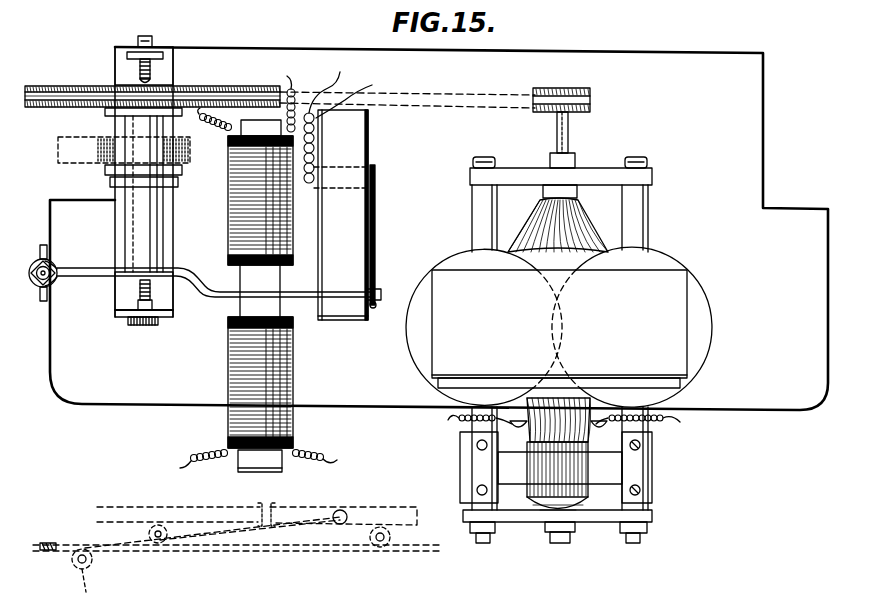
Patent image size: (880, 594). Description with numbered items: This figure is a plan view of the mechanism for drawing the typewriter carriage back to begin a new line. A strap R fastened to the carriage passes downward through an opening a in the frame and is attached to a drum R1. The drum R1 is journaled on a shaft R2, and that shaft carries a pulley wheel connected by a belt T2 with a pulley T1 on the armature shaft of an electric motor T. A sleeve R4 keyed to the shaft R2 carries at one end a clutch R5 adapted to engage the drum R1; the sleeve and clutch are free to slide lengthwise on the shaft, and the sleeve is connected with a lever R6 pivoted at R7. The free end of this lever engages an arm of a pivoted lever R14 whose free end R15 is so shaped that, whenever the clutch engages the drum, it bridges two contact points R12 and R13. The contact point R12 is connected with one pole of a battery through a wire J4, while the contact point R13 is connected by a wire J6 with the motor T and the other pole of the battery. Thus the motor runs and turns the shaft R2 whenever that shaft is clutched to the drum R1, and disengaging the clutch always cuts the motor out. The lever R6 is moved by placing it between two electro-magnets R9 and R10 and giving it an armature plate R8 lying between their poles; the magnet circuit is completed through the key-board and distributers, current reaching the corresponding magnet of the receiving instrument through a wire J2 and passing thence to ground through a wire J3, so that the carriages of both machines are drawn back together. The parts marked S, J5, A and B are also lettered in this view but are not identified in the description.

The frame or casing S is at (439, 228).
The strap R is at (53, 164).
The drum R1 is at (130, 123).
The shaft R2 is at (151, 84).
The sleeve R4 is at (158, 217).
The clutch R5 is at (180, 184).
The lever R6 is at (183, 270).
The pivot R7 is at (57, 281).
The armature plate R8 is at (297, 272).
The electro-magnet R9 is at (271, 192).
The electro-magnet R10 is at (275, 394).
The contact point R12 is at (370, 160).
The contact point R13 is at (92, 77).
The pivoted lever R14 is at (374, 305).
The free end of pivoted lever R15 is at (372, 232).
The wire J2 is at (204, 122).
The wire J3 is at (284, 96).
The wire J4 is at (350, 96).
The spring coils J5 is at (255, 457).
The wire J6 is at (628, 583).
The electric motor T is at (559, 282).
The pulley T1 is at (590, 101).
The belt T2 is at (407, 87).
The track diagram wheel A is at (156, 545).
The track diagram wheel B is at (362, 514).
The opening a is at (58, 550).